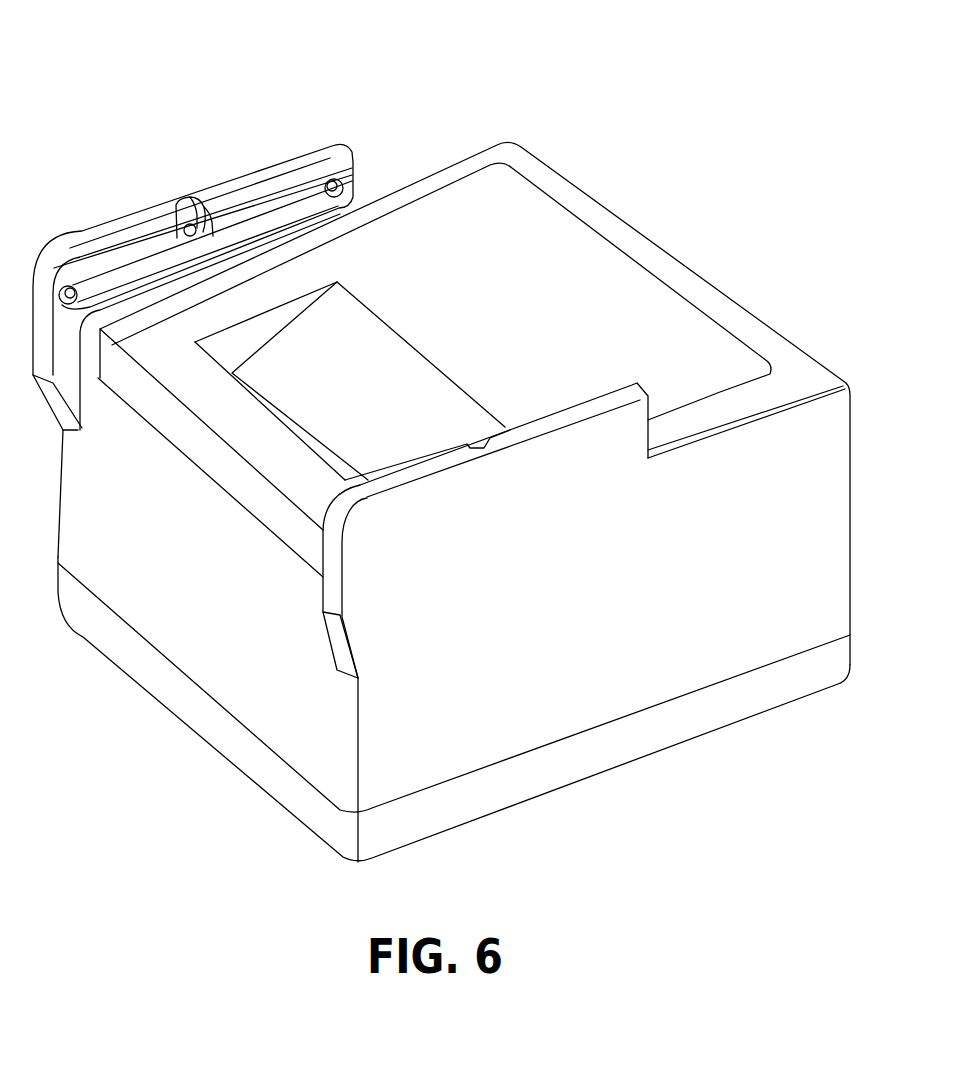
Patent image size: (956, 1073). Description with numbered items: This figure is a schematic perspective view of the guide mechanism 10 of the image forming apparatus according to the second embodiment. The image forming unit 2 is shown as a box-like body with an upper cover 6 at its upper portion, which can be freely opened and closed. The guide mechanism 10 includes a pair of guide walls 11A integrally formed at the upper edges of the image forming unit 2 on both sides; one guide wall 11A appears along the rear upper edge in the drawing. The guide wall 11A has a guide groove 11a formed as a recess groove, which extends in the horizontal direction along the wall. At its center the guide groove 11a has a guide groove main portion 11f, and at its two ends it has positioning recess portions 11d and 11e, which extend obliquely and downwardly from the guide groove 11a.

The image forming unit 2 is at (170, 613).
The upper cover 6 is at (533, 280).
The guide mechanism 10 is at (118, 263).
The guide wall 11A is at (283, 167).
The guide groove 11a is at (217, 213).
The positioning recess portion 11d is at (70, 286).
The positioning recess portion 11e is at (330, 180).
The guide groove main portion 11f is at (152, 247).